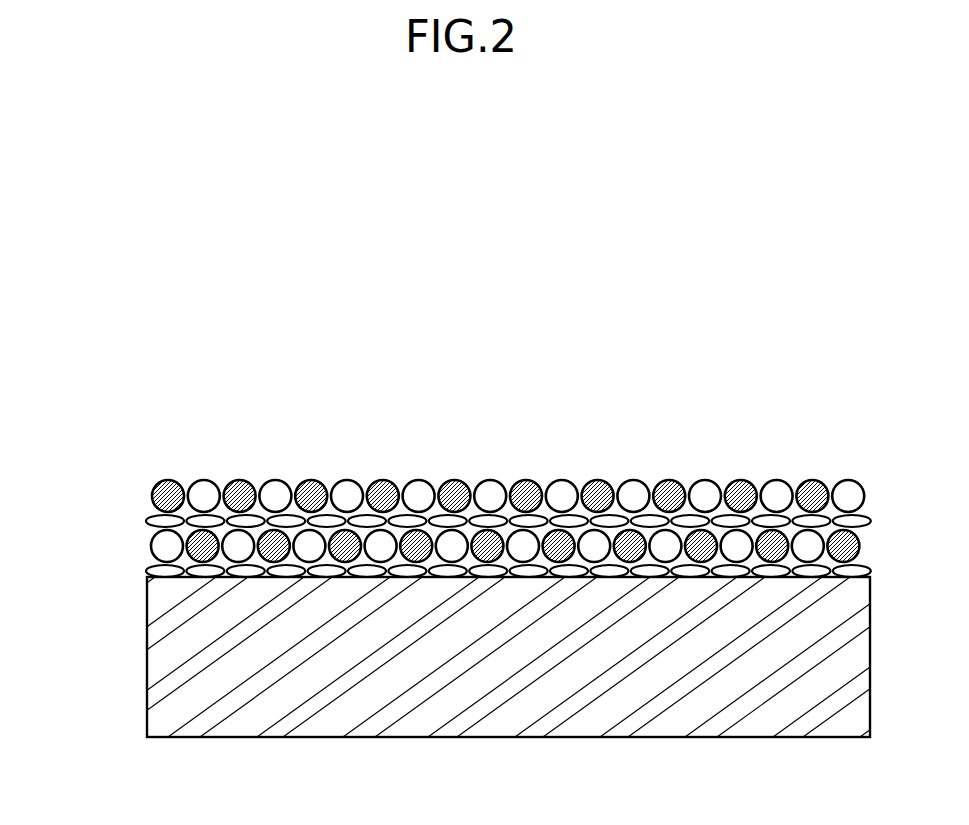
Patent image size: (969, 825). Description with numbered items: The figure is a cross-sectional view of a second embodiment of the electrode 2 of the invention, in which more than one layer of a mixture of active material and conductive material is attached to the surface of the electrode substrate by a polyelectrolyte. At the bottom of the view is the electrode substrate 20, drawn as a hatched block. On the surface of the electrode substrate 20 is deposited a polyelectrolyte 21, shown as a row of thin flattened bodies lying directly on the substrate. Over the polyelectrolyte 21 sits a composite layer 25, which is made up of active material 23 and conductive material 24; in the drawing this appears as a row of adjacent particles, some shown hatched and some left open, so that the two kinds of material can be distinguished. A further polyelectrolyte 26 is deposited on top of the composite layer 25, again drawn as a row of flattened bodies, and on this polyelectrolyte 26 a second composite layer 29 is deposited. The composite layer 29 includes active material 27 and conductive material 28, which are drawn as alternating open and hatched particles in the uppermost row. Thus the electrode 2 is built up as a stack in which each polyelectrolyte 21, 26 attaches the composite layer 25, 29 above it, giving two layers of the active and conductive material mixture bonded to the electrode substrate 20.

The electrode 2 is at (613, 432).
The electrode substrate 20 is at (157, 663).
The polyelectrolyte 21 is at (148, 575).
The active material 23 is at (166, 545).
The conductive material 24 is at (163, 490).
The composite layer 25 is at (56, 423).
The polyelectrolyte 26 is at (223, 500).
The active material 27 is at (418, 493).
The conductive material 28 is at (458, 493).
The composite layer 29 is at (492, 410).